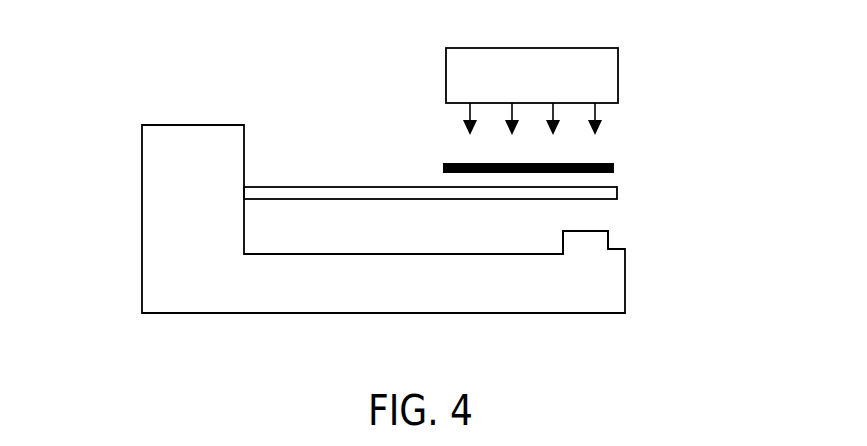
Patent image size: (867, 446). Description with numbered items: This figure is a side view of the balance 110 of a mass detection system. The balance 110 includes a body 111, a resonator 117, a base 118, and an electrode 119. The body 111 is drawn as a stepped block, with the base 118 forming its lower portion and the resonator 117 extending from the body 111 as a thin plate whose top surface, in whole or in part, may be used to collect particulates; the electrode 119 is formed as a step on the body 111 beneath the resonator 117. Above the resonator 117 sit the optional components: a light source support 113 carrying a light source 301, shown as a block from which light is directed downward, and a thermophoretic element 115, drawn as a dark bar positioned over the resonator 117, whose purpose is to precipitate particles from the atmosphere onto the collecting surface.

The balance 110 is at (172, 34).
The body 111 is at (142, 258).
The light source support 113 is at (527, 48).
The thermophoretic element 115 is at (614, 169).
The resonator 117 is at (617, 193).
The base 118 is at (338, 313).
The electrode 119 is at (608, 241).
The light source 301 is at (457, 103).